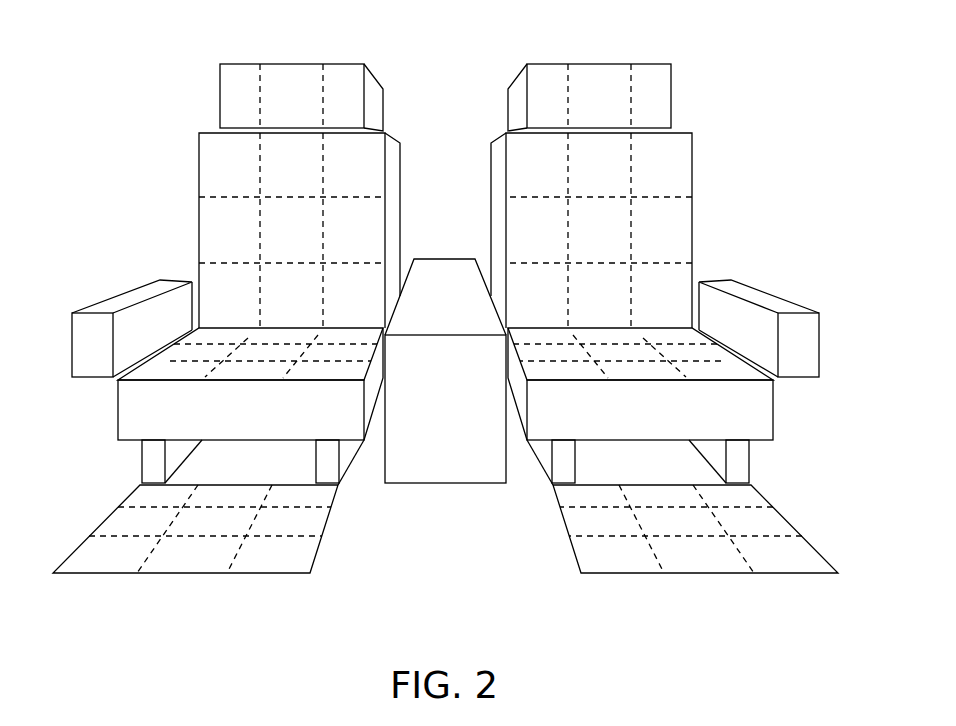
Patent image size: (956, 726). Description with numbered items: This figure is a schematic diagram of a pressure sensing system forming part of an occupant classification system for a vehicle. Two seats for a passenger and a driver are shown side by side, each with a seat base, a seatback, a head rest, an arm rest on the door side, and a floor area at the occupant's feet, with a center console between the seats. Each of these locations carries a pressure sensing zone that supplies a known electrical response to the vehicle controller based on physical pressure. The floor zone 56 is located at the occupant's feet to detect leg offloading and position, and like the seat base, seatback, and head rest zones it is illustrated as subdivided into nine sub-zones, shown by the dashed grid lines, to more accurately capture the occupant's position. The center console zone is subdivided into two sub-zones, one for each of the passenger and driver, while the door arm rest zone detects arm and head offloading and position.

The floor zone 56 is at (435, 270).